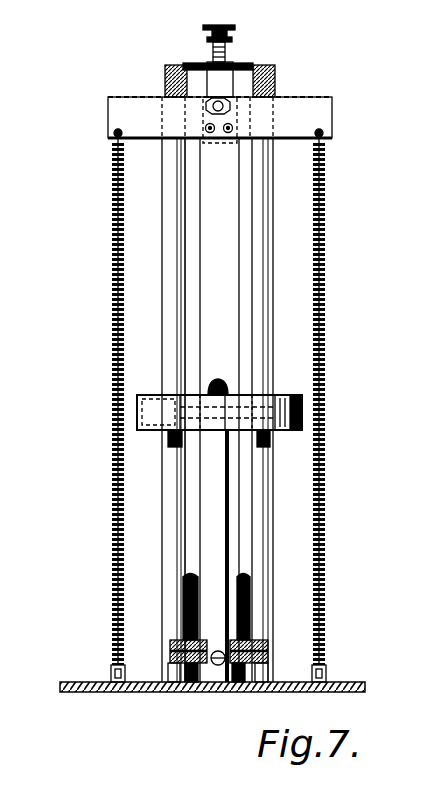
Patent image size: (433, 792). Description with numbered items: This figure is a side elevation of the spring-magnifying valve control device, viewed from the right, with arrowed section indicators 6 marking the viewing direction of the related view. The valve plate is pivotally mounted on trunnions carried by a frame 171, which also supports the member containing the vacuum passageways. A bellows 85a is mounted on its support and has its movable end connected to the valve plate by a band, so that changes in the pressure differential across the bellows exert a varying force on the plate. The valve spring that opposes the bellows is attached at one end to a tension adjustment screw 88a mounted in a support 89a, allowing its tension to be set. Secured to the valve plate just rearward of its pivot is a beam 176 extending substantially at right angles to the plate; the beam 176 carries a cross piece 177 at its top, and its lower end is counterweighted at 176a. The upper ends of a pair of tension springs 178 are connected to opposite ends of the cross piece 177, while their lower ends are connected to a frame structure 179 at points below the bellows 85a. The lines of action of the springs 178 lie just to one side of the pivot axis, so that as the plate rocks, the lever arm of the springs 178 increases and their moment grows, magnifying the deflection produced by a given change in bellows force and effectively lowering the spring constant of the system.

The section line 6- 6 is at (226, 23).
The bellows 85a is at (183, 582).
The tension adjustment screw 88a is at (223, 56).
The support 89a is at (197, 63).
The frame 171 is at (148, 393).
The beam 176 is at (233, 275).
The counterweight 176a is at (172, 642).
The cross piece 177 is at (136, 97).
The tension springs 178 is at (112, 240).
The frame structure 179 is at (92, 693).